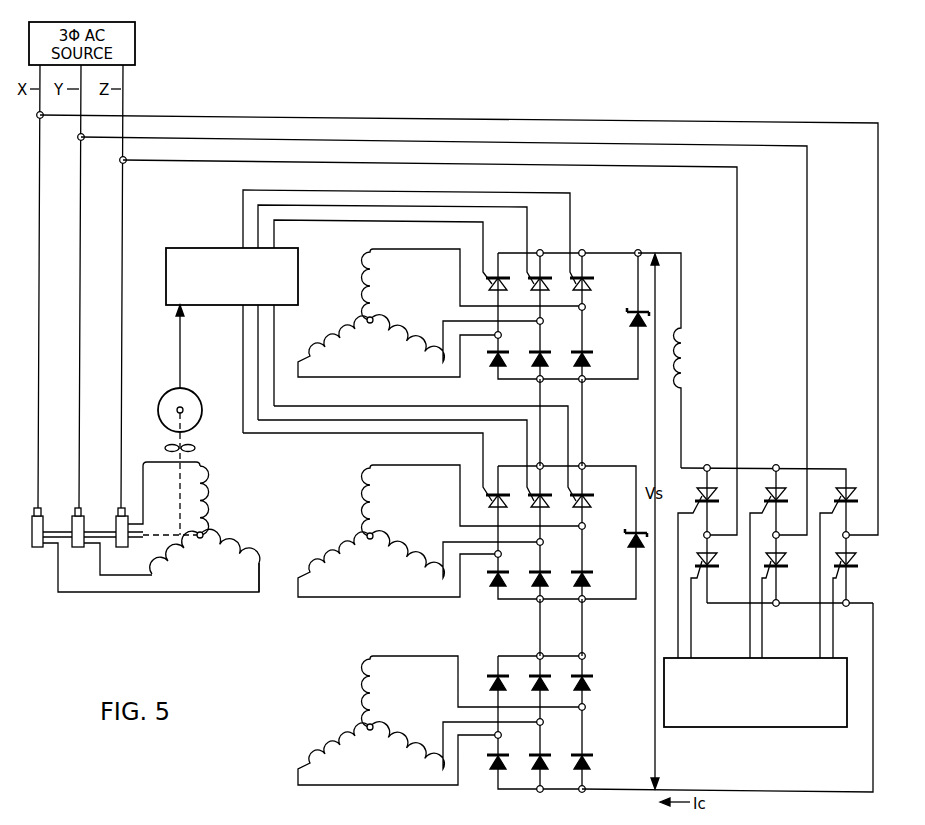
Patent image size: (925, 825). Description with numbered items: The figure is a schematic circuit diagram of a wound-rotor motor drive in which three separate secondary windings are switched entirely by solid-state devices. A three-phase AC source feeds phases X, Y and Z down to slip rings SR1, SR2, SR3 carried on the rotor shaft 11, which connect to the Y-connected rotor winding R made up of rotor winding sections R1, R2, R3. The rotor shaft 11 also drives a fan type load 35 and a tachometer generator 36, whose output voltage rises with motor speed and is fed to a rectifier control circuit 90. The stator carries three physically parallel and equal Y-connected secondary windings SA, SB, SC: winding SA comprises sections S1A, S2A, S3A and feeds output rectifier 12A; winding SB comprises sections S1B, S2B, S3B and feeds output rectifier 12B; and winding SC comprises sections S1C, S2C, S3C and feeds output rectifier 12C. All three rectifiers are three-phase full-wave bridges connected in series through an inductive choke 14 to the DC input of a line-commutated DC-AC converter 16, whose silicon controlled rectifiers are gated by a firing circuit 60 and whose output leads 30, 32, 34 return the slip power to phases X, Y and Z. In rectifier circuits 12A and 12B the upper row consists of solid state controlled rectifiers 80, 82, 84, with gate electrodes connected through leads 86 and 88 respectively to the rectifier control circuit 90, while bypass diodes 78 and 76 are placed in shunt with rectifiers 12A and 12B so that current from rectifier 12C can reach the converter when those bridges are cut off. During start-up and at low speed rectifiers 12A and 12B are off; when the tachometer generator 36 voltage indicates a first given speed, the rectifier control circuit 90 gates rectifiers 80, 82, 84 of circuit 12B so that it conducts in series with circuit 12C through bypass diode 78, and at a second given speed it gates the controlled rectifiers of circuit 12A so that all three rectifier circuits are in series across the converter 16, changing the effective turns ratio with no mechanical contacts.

The output lead 30 is at (254, 118).
The output lead 32 is at (320, 140).
The output lead 34 is at (372, 164).
The gate lead 86 is at (424, 220).
The gate lead 88 is at (378, 433).
The rectifier control circuit 90 is at (283, 249).
The tachometer generator 36 is at (198, 397).
The fan type load 35 is at (195, 448).
The rotor shaft 11 is at (144, 524).
The output rectifier 12A is at (500, 237).
The output rectifier 12B is at (500, 453).
The output rectifier 12C is at (511, 655).
The solid state controlled rectifier 80 is at (494, 514).
The solid state controlled rectifier 82 is at (536, 515).
The solid state controlled rectifier 84 is at (578, 515).
The bypass diode 78 is at (632, 318).
The bypass diode 76 is at (630, 539).
The inductive choke 14 is at (684, 351).
The DC-AC converter 16 is at (793, 467).
The firing circuit 60 is at (780, 728).
The slip ring SR1 is at (37, 548).
The slip ring SR2 is at (78, 548).
The slip ring SR3 is at (122, 548).
The rotor winding R is at (213, 529).
The rotor winding section R1 is at (207, 498).
The rotor winding section R2 is at (232, 548).
The rotor winding section R3 is at (176, 566).
The stator winding SA is at (436, 313).
The stator winding SB is at (440, 531).
The stator winding SC is at (435, 720).
The stator winding section S1A is at (374, 286).
The stator winding section S2A is at (406, 333).
The stator winding section S3A is at (394, 346).
The stator winding section S1B is at (374, 497).
The stator winding section S2B is at (407, 551).
The stator winding section S3B is at (348, 545).
The stator winding section S1C is at (374, 686).
The stator winding section S2C is at (396, 735).
The stator winding section S3C is at (334, 740).